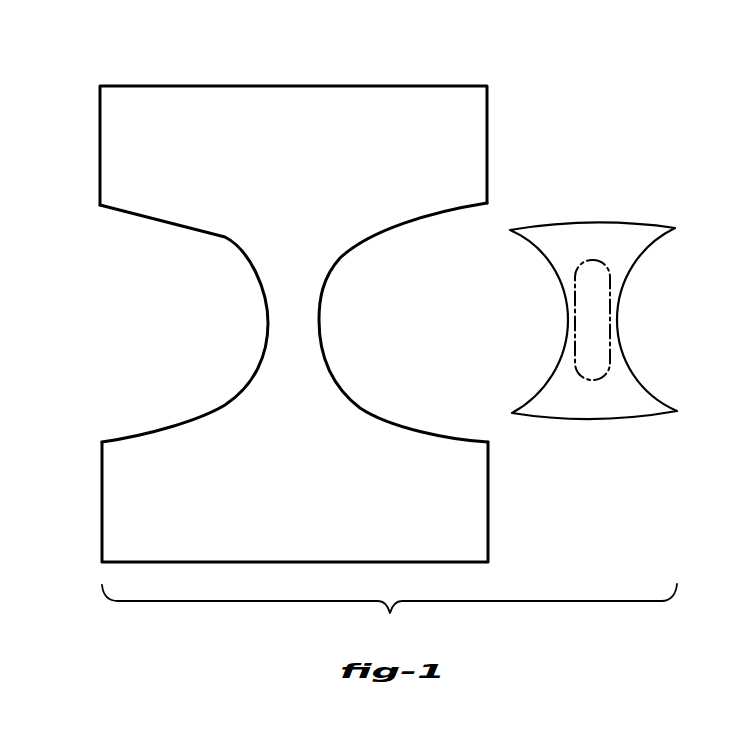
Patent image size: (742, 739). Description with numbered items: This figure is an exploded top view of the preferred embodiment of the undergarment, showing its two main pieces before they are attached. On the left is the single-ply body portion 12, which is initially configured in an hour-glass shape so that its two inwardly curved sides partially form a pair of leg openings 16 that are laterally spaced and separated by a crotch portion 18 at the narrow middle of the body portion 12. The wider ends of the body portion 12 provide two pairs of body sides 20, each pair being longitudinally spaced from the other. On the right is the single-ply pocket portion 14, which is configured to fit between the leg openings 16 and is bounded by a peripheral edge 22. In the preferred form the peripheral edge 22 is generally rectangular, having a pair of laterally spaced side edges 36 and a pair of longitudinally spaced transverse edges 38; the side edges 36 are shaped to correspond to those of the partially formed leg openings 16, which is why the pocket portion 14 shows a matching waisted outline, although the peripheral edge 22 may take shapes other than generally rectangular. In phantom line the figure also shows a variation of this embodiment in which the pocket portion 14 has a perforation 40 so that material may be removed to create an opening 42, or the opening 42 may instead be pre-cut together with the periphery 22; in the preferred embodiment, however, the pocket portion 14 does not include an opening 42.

The body portion 12 is at (490, 122).
The pocket portion 14 is at (628, 422).
The leg openings 16 is at (264, 297).
The crotch portion 18 is at (285, 325).
The body sides 20 is at (99, 147).
The peripheral edge 22 is at (632, 371).
The side edges 36 is at (562, 290).
The transverse edges 38 is at (598, 218).
The perforation 40 is at (572, 355).
The opening 42 is at (603, 303).